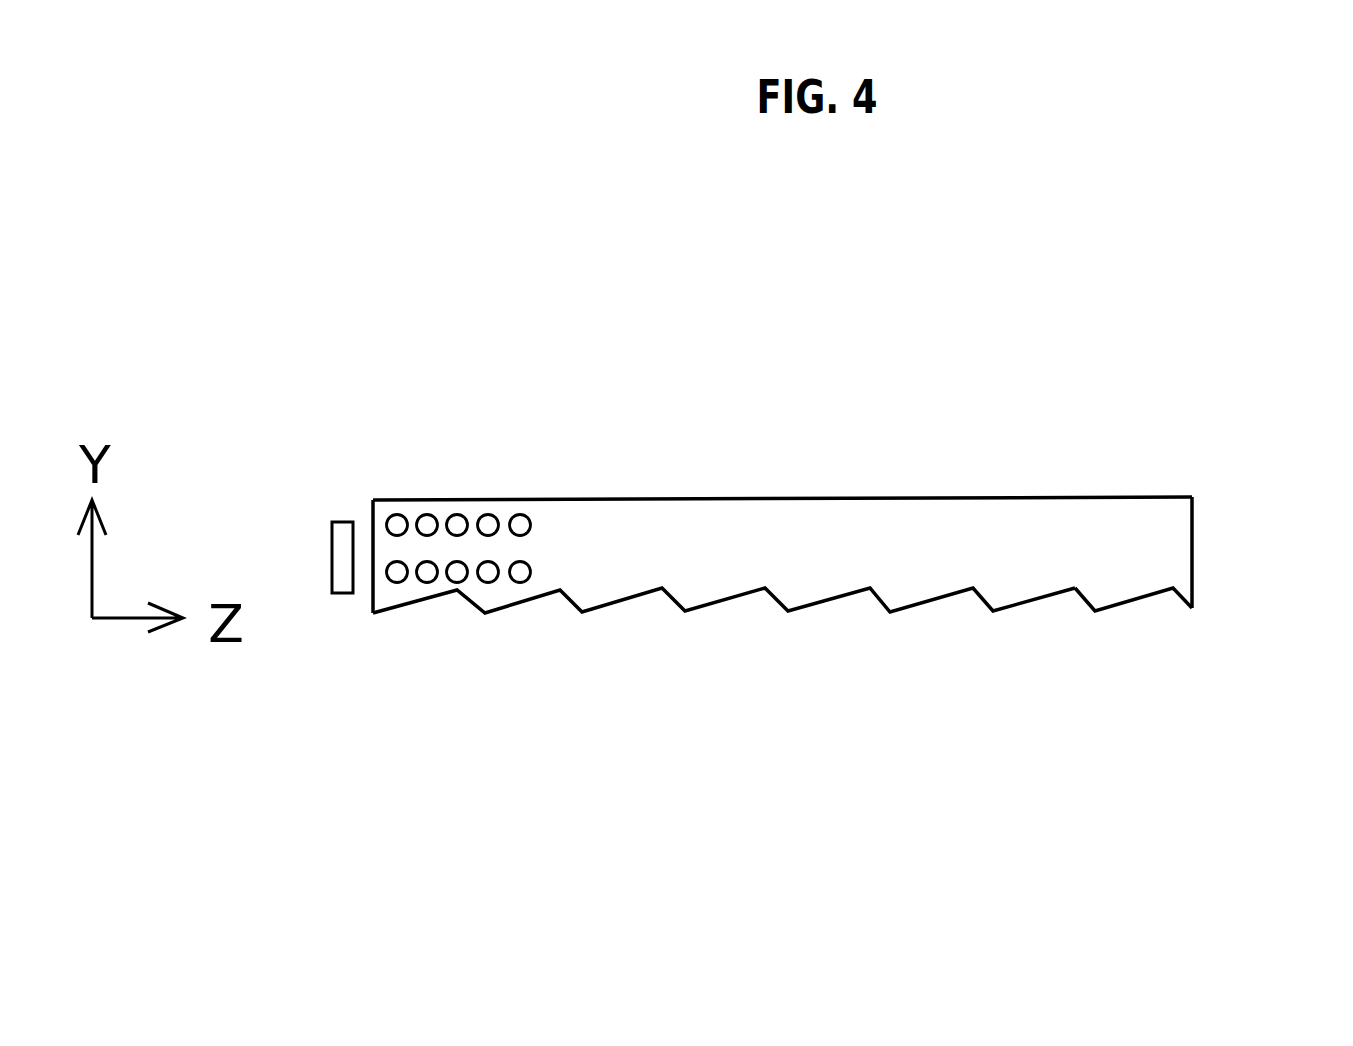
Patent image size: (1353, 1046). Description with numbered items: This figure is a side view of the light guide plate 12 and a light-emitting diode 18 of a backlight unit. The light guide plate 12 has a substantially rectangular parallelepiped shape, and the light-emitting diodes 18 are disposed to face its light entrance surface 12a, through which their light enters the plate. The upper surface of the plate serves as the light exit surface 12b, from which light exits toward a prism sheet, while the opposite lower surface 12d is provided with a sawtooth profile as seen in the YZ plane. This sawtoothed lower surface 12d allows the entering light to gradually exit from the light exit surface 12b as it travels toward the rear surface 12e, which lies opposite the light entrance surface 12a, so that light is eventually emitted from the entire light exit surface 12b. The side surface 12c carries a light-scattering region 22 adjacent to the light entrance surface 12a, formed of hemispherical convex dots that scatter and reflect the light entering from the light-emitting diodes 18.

The light guide plate 12 is at (826, 556).
The light entrance surface 12a is at (373, 525).
The light exit surface 12b is at (808, 497).
The side surfaces 12c is at (1137, 710).
The lower surface 12d is at (848, 712).
The rear surface 12e is at (1193, 540).
The light-emitting diodes 18 is at (322, 715).
The light-scattering regions 22 is at (489, 648).